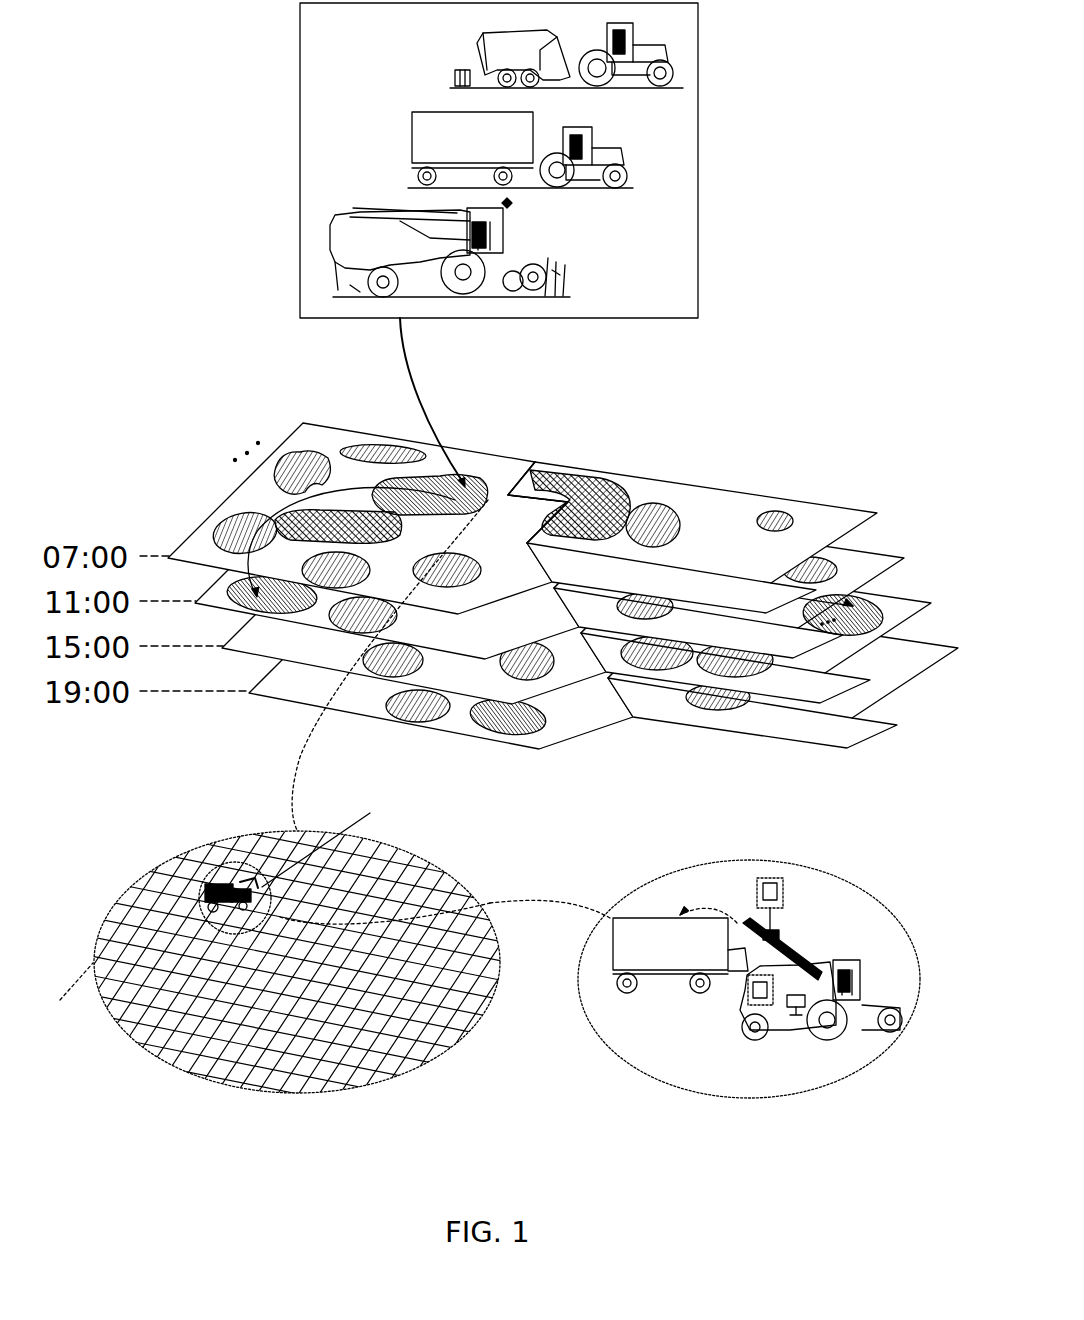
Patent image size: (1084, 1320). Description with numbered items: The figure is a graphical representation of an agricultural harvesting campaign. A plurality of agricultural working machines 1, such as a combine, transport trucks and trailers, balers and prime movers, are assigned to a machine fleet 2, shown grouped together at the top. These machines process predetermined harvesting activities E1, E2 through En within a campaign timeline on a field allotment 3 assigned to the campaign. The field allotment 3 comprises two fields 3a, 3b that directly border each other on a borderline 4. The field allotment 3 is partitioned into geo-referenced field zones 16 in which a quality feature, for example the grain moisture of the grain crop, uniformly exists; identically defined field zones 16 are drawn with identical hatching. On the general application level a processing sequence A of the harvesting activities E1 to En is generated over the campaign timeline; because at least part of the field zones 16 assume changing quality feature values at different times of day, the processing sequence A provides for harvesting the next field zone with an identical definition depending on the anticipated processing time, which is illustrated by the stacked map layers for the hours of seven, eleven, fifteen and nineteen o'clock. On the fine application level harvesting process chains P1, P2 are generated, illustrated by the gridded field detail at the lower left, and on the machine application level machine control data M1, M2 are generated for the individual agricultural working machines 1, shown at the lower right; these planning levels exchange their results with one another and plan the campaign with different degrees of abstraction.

The agricultural working machine 1 is at (508, 204).
The machine fleet 2 is at (703, 102).
The field allotment 3 is at (521, 641).
The field 3a is at (192, 540).
The field 3b is at (703, 530).
The borderline 4 is at (531, 458).
The geo-referenced field zone 16 is at (540, 716).
The processing sequence A is at (700, 512).
The harvesting activity En is at (237, 500).
The harvesting activity E2 is at (345, 444).
The harvesting activity E1 is at (421, 876).
The harvesting process chain P1 is at (523, 933).
The harvesting process chain P2 is at (87, 973).
The machine control data M1 is at (747, 1006).
The machine control data M2 is at (767, 880).